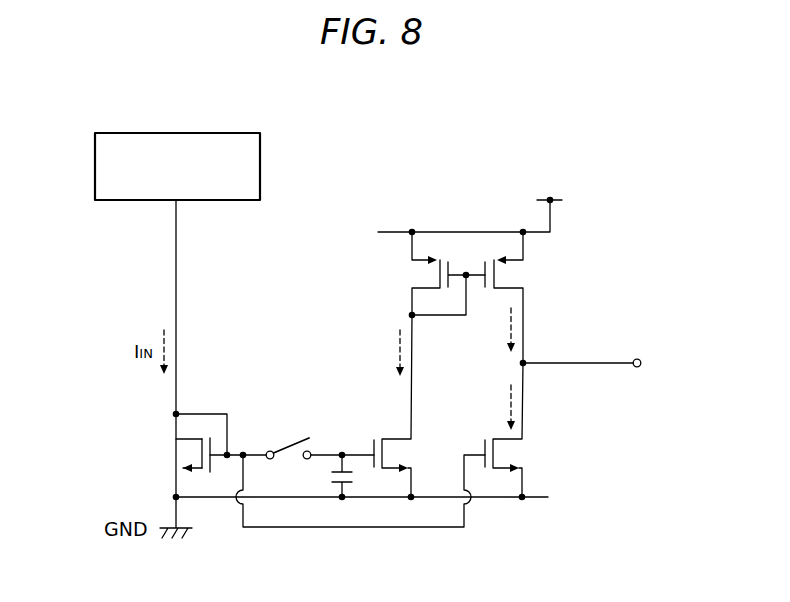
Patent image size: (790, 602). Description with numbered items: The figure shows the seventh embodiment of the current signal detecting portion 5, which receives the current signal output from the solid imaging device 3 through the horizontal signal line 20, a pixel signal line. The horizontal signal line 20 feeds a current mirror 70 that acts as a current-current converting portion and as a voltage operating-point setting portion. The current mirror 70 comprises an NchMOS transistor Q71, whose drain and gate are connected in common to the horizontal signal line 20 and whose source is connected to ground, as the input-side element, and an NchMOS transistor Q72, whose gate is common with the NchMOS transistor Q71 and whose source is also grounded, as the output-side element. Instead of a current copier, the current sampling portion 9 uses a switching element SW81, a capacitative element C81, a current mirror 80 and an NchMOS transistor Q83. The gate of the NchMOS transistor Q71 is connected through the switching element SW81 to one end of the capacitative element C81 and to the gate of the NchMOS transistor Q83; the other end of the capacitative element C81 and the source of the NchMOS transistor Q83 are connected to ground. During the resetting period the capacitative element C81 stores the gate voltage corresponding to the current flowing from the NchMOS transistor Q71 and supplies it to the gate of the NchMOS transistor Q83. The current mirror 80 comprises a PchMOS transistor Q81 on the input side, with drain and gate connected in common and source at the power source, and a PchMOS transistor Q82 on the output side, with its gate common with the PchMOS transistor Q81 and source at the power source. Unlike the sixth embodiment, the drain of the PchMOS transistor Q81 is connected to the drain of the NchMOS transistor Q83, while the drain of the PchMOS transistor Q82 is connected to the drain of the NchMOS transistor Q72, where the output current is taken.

The solid imaging device 3 is at (95, 165).
The current signal detecting portion 5 is at (343, 163).
The horizontal signal line 20 is at (176, 279).
The current mirror 80 is at (470, 277).
The current sampling portion 9 is at (454, 368).
The current mirror 70 is at (487, 524).
The NchMOS transistor Q71 is at (176, 453).
The NchMOS transistor Q72 is at (525, 457).
The PchMOS transistor Q81 is at (412, 274).
The PchMOS transistor Q82 is at (525, 277).
The NchMOS transistor Q83 is at (398, 432).
The switching element SW81 is at (291, 440).
The capacitative element C81 is at (326, 476).